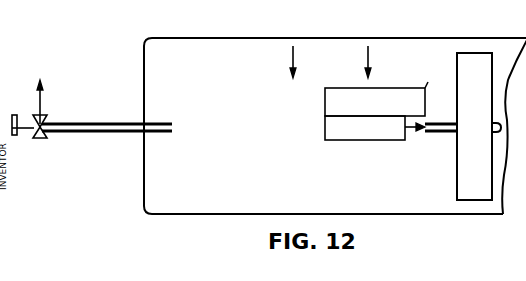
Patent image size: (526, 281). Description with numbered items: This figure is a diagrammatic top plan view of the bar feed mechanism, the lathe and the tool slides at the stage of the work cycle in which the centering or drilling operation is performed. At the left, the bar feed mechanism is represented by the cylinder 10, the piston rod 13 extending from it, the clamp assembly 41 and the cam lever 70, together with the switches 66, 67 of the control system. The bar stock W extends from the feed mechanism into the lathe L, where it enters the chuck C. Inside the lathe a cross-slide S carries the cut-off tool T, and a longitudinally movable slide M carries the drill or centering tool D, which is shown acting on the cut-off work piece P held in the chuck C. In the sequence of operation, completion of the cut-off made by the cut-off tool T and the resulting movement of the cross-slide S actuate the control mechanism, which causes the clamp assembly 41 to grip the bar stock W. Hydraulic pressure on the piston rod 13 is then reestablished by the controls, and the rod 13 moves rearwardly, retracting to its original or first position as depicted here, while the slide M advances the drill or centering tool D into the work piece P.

The cylinder 10 is at (14, 132).
The piston rod 13 is at (20, 115).
The clamp assembly 41 is at (45, 118).
The cam lever 70 is at (43, 93).
The bar stock W is at (123, 124).
The lathe L is at (200, 50).
The switch 66 is at (293, 46).
The switch 67 is at (368, 46).
The cross-slide S is at (333, 100).
The longitudinally movable slide M is at (333, 132).
The cut-off tool T is at (429, 75).
The drill or centering tool D is at (409, 132).
The cut-off work piece P is at (447, 125).
The chuck C is at (478, 58).